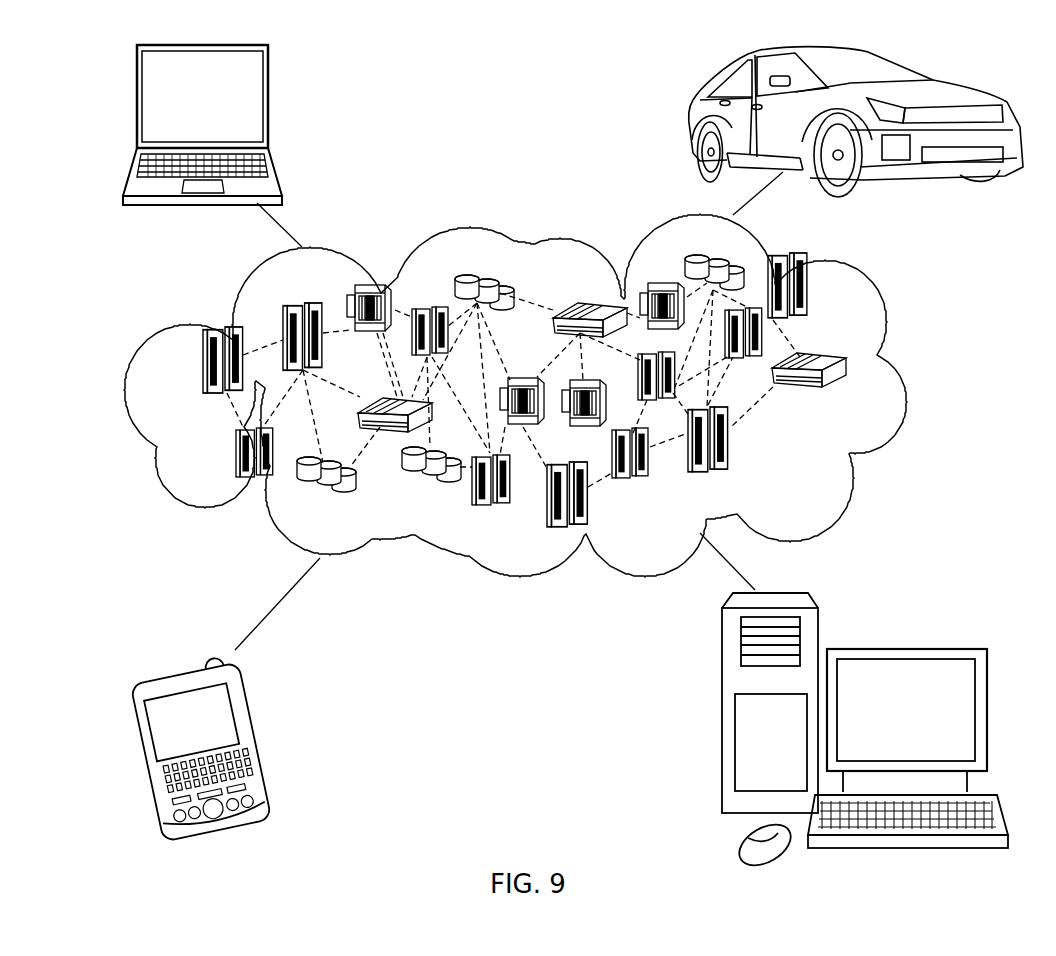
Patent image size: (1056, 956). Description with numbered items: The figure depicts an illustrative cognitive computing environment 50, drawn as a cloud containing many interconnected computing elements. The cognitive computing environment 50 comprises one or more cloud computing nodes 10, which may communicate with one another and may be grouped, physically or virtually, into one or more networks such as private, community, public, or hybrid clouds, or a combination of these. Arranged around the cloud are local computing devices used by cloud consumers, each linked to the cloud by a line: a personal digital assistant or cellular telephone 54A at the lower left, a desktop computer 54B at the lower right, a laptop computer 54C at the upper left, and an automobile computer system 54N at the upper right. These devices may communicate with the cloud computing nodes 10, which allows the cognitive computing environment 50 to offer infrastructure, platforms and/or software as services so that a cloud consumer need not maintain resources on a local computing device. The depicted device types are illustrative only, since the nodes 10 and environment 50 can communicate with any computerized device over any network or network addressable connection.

The cloud computing node 10 is at (858, 397).
The cognitive computing environment 50 is at (905, 368).
The personal digital assistant (PDA) or cellular telephone 54A is at (265, 740).
The desktop computer 54B is at (903, 648).
The laptop computer 54C is at (270, 105).
The automobile computer system 54N is at (692, 120).